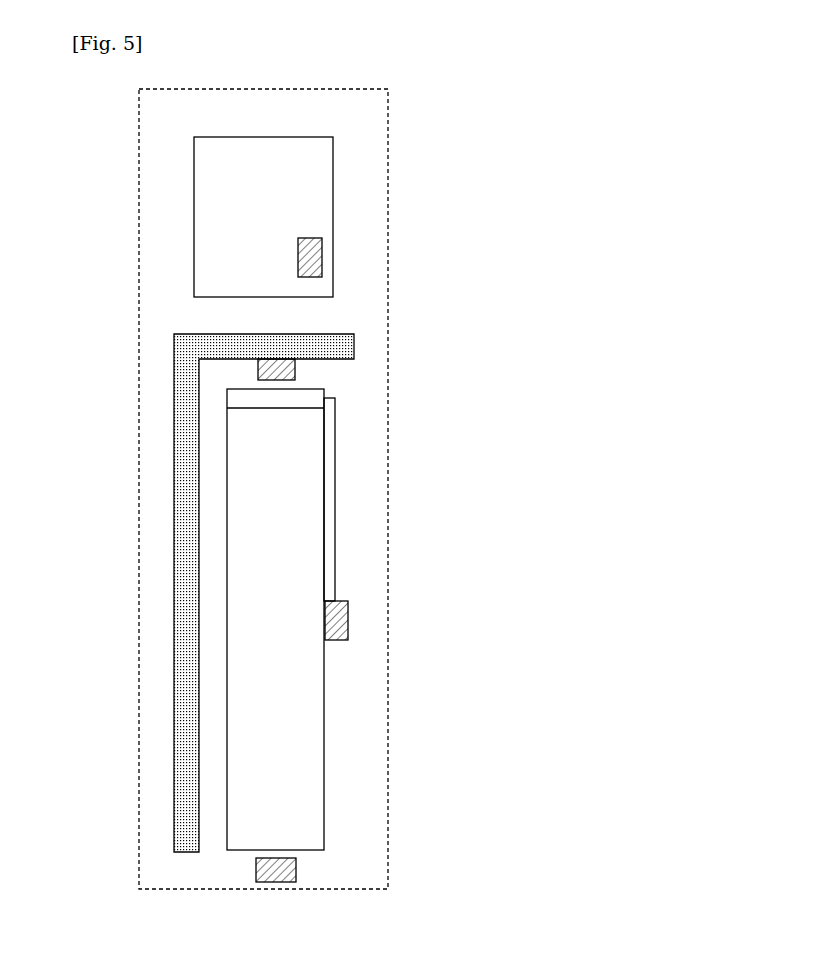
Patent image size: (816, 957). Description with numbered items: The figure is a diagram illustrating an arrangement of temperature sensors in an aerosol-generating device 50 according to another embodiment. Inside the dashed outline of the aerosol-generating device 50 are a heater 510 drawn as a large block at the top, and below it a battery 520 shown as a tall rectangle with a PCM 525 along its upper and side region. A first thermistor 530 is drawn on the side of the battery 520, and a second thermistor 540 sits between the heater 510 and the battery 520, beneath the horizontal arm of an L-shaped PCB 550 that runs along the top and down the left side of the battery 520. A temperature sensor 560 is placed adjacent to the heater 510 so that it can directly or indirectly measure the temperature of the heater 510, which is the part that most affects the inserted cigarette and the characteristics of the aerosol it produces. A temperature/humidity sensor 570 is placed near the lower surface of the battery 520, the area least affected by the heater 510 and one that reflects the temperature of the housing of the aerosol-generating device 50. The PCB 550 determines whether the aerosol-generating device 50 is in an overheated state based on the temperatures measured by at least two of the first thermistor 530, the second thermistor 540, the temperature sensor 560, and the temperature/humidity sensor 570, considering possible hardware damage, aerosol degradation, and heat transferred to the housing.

The aerosol-generating device 50 is at (338, 88).
The heater 510 is at (268, 136).
The temperature sensor 560 is at (322, 258).
The PCB 550 is at (175, 705).
The second thermistor 540 is at (295, 372).
The battery 520 is at (318, 702).
The PCM 525 is at (318, 395).
The first thermistor 530 is at (348, 622).
The temperature/humidity sensor 570 is at (296, 873).